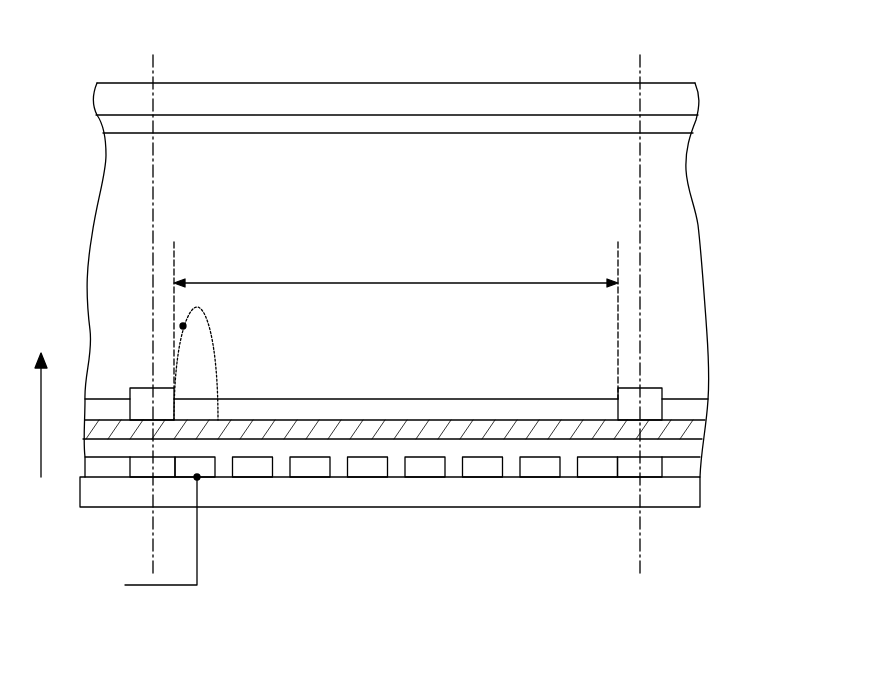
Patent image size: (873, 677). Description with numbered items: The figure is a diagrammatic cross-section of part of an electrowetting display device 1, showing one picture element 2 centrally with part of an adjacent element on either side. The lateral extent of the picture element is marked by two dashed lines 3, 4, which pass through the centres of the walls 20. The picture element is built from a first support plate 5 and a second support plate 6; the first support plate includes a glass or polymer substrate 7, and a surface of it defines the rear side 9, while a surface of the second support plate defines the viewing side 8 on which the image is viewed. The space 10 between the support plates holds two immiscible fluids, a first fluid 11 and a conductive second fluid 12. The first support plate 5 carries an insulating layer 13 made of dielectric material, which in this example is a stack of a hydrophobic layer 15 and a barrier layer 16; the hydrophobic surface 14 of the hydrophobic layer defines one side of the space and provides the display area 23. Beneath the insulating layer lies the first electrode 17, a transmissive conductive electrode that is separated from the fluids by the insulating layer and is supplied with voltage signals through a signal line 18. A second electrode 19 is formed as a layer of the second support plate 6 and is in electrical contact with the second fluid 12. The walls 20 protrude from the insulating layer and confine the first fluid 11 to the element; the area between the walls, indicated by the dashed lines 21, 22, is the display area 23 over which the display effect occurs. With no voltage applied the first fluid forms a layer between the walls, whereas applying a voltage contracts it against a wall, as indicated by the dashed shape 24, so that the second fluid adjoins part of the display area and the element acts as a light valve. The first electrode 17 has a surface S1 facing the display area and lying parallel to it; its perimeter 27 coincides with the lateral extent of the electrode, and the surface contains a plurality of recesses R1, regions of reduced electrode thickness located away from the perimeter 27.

The electrowetting display device 1 is at (770, 47).
The picture element 2 is at (359, 31).
The dashed line 3 is at (153, 62).
The dashed line 4 is at (640, 62).
The first support plate 5 is at (762, 399).
The second support plate 6 is at (570, 97).
The substrate 7 is at (673, 497).
The viewing side 8 is at (268, 83).
The rear side 9 is at (403, 510).
The space 10 is at (455, 167).
The first fluid 11 is at (537, 405).
The second fluid 12 is at (697, 250).
The insulating layer 13 is at (715, 420).
The hydrophobic surface 14 is at (457, 421).
The hydrophobic layer 15 is at (382, 433).
The barrier layer 16 is at (302, 447).
The first electrode 17 is at (480, 467).
The signal line 18 is at (130, 587).
The second electrode 19 is at (105, 124).
The wall 20 is at (140, 395).
The dashed line 21 is at (178, 243).
The dashed line 22 is at (614, 243).
The display area 23 is at (396, 272).
The dashed shape 24 is at (186, 325).
The perimeter 27 is at (175, 457).
The recess R1 is at (340, 467).
The surface S1 is at (598, 460).